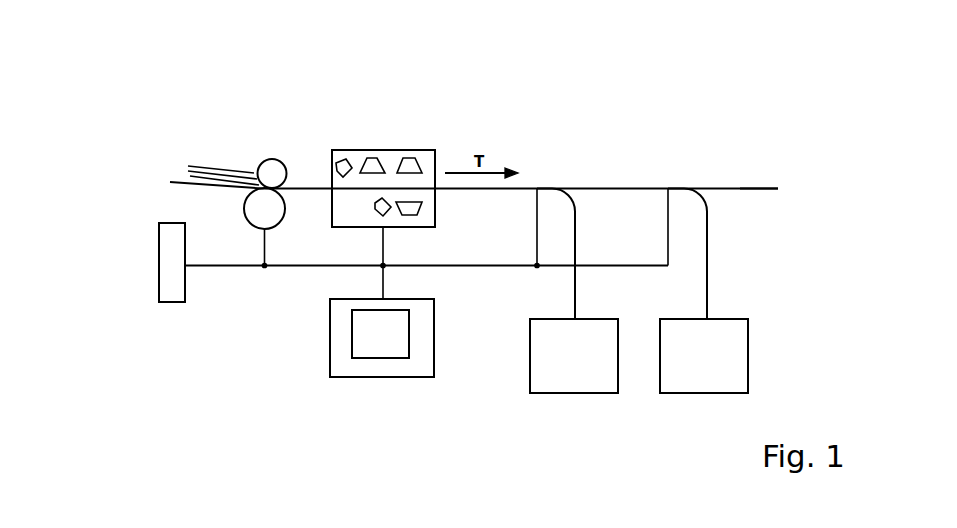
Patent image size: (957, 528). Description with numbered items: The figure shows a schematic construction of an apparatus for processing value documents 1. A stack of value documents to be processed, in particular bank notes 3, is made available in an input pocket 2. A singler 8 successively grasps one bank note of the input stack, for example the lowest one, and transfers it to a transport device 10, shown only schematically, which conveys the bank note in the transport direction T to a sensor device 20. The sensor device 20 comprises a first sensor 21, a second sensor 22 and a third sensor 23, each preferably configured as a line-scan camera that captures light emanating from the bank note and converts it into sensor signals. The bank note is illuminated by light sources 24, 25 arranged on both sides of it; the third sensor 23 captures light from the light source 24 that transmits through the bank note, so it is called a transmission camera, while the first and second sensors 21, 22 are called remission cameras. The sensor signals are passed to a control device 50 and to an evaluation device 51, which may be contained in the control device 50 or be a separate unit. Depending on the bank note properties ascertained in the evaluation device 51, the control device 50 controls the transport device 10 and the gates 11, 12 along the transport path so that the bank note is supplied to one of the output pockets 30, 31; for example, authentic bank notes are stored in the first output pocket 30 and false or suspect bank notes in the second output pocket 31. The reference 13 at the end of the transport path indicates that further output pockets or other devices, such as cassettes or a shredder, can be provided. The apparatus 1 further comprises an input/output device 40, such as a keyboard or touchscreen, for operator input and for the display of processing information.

The apparatus for processing value documents 1 is at (292, 72).
The input pocket 2 is at (176, 175).
The bank notes 3 is at (224, 166).
The singler 8 is at (278, 213).
The transport device 10 is at (305, 187).
The gate 11 is at (543, 188).
The gate 12 is at (680, 188).
The end of transport path 13 is at (774, 188).
The sensor device 20 is at (394, 182).
The first sensor 21 is at (370, 158).
The second sensor 22 is at (415, 215).
The third sensor 23 is at (423, 162).
The light source 24 is at (380, 213).
The light source 25 is at (338, 160).
The first output pocket 30 is at (592, 327).
The second output pocket 31 is at (727, 327).
The input/output device 40 is at (162, 288).
The control device 50 is at (382, 361).
The evaluation device 51 is at (370, 346).